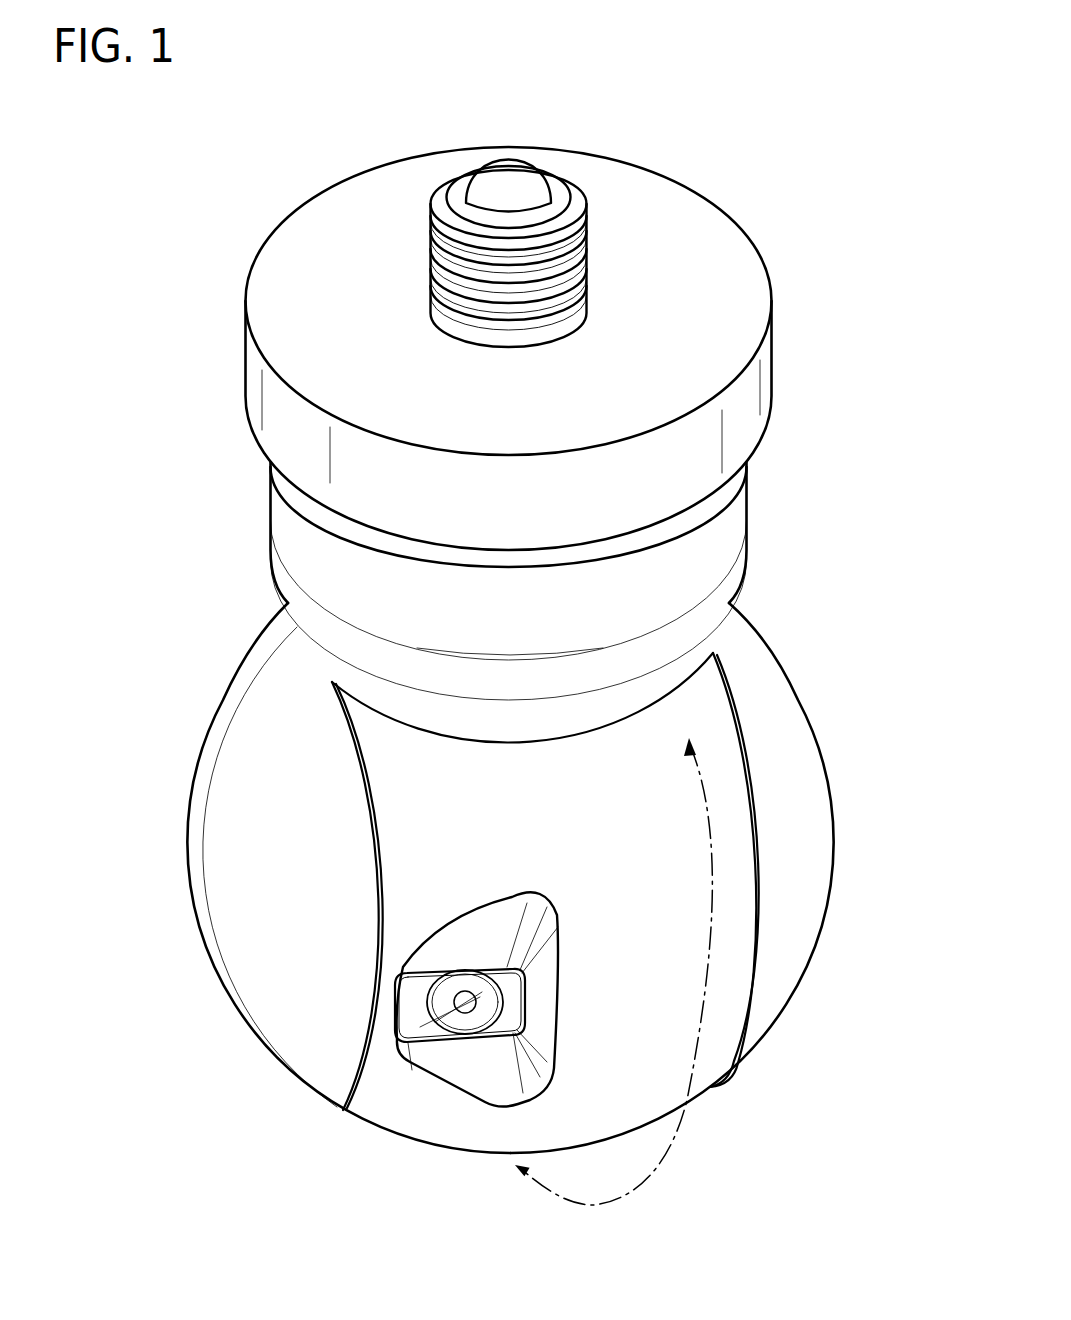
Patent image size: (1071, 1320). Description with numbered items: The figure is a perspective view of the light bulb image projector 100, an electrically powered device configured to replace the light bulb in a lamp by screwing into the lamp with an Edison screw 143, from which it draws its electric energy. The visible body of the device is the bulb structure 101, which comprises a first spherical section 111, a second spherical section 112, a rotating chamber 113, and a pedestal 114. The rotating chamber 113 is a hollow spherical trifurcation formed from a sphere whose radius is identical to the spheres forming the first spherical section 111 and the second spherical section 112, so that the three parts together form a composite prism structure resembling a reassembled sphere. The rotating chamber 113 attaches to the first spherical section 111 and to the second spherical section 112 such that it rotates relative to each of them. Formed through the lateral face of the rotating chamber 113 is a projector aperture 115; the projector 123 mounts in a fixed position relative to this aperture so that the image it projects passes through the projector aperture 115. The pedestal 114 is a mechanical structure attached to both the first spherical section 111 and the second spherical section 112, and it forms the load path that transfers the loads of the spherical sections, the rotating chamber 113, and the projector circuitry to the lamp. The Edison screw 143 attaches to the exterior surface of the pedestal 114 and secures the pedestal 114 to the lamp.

The light bulb image projector 100 is at (742, 92).
The bulb structure 101 is at (92, 228).
The first spherical section 111 is at (288, 1007).
The second spherical section 112 is at (792, 798).
The rotating chamber 113 is at (718, 762).
The pedestal 114 is at (764, 376).
The projector aperture 115 is at (560, 927).
The projector 123 is at (465, 1003).
The Edison screw 143 is at (565, 267).